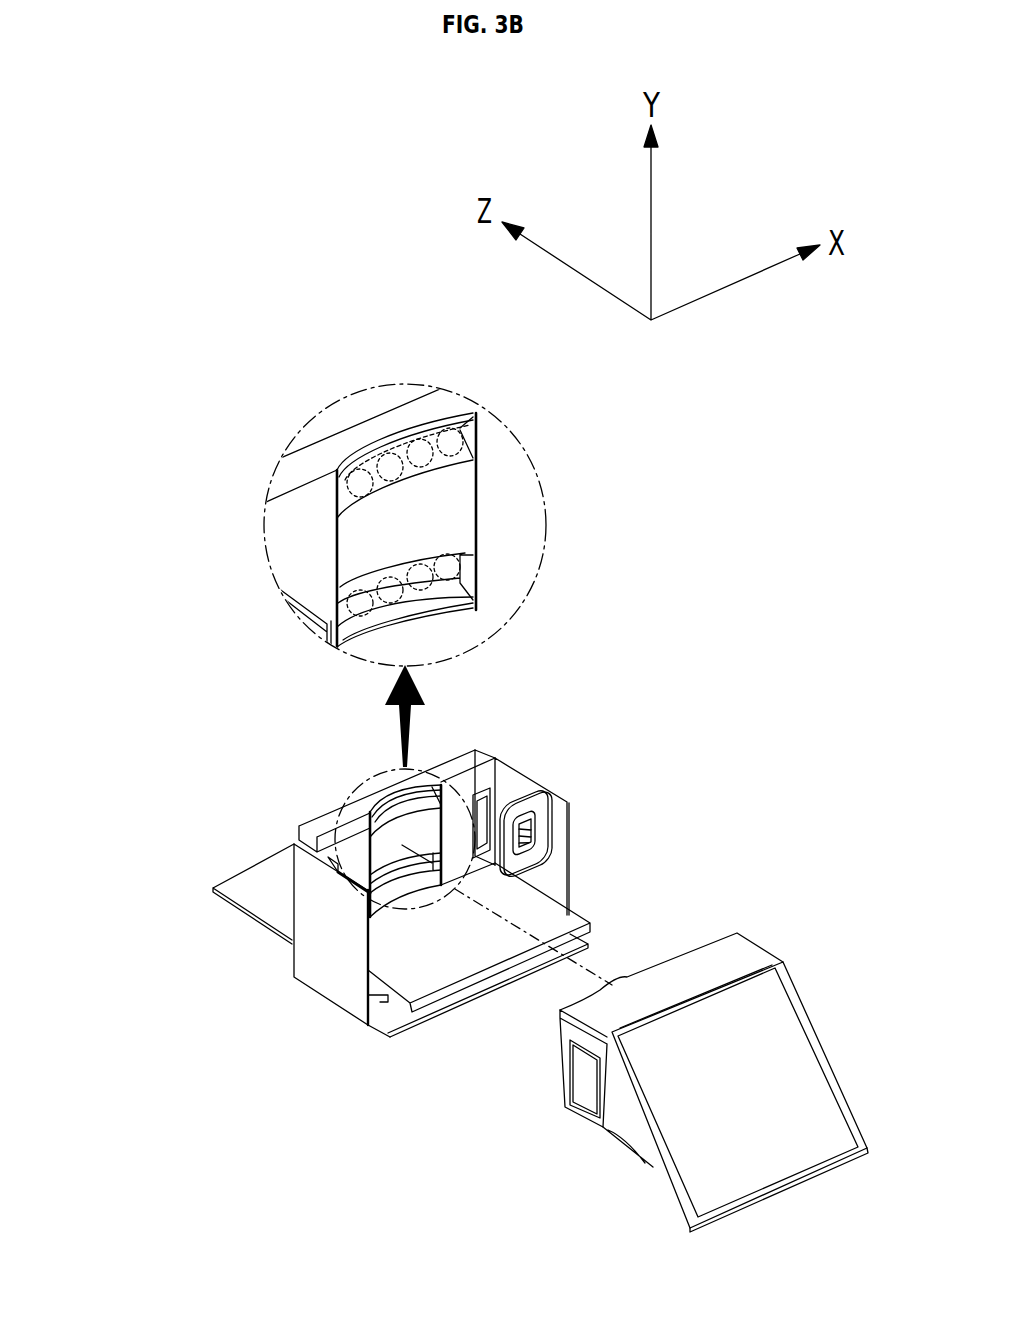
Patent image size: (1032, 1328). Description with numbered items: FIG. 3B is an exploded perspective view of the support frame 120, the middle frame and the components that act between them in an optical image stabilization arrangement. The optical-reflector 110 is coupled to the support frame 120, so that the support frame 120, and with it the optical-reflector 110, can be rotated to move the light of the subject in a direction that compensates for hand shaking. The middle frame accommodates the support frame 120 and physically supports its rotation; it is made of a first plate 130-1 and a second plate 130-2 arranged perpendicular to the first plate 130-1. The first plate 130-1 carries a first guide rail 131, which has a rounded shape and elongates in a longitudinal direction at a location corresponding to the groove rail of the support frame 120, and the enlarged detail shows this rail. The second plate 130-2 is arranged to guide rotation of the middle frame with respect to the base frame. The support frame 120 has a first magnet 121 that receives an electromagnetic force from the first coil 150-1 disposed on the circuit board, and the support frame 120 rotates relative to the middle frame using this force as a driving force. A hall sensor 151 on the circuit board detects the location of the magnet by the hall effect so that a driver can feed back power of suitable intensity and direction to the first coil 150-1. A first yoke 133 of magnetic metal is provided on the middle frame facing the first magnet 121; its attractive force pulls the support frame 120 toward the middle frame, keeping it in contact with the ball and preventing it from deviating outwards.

The optical-reflector 110 is at (777, 1160).
The support frame 120 is at (735, 960).
The first magnet 121 is at (588, 1083).
The first plate 130-1 is at (327, 825).
The second plate 130-2 is at (437, 958).
The first guide rail 131 is at (463, 570).
The first yoke 133 is at (498, 787).
The first coil 150-1 is at (547, 817).
The hall sensor 151 is at (532, 842).